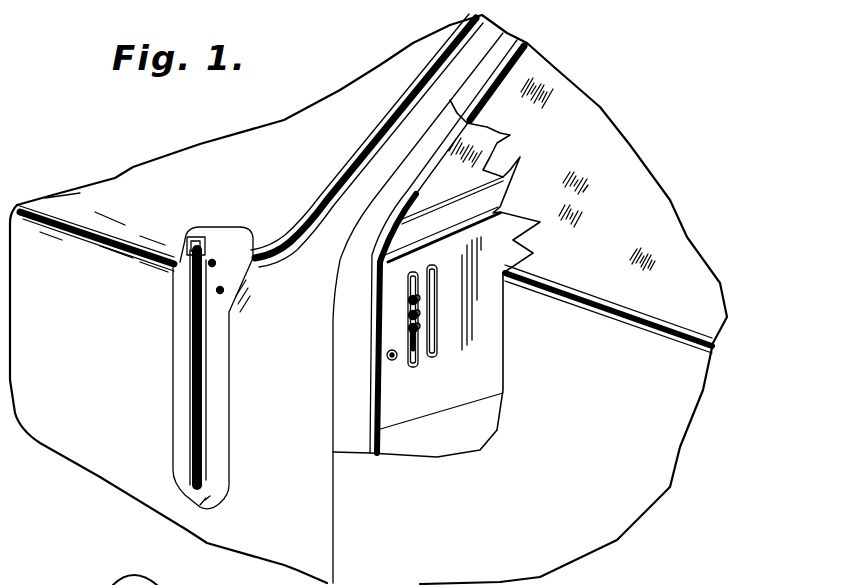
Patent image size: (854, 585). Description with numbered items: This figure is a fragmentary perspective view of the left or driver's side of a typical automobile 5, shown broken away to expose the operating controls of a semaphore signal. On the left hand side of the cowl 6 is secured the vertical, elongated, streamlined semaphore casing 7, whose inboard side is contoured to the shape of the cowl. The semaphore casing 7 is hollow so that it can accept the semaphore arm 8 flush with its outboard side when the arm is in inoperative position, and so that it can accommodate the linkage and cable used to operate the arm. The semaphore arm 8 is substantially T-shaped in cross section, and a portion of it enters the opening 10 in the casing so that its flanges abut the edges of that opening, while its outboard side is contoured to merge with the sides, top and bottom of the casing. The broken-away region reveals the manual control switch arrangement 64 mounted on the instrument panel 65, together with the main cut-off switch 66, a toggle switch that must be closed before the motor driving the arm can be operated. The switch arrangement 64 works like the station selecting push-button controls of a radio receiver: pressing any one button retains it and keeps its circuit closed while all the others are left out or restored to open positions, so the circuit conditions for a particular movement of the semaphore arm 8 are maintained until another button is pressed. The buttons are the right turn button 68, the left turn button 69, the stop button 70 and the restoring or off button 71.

The automobile 5 is at (291, 110).
The cowl 6 is at (107, 468).
The semaphore casing 7 is at (173, 363).
The semaphore arm 8 is at (180, 406).
The opening 10 is at (188, 242).
The manual control switch arrangement 64 is at (394, 326).
The instrument panel 65 is at (480, 367).
The cut-off switch 66 is at (392, 361).
The right turn button 68 is at (414, 298).
The left turn button 69 is at (414, 311).
The stop button 70 is at (414, 324).
The restoring or off button 71 is at (414, 341).